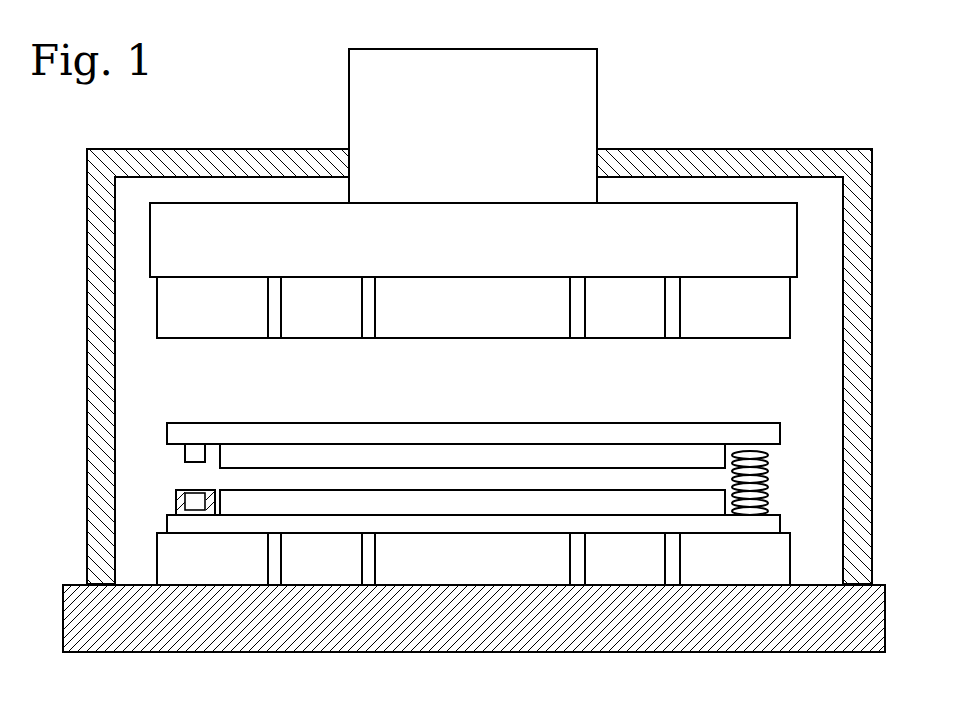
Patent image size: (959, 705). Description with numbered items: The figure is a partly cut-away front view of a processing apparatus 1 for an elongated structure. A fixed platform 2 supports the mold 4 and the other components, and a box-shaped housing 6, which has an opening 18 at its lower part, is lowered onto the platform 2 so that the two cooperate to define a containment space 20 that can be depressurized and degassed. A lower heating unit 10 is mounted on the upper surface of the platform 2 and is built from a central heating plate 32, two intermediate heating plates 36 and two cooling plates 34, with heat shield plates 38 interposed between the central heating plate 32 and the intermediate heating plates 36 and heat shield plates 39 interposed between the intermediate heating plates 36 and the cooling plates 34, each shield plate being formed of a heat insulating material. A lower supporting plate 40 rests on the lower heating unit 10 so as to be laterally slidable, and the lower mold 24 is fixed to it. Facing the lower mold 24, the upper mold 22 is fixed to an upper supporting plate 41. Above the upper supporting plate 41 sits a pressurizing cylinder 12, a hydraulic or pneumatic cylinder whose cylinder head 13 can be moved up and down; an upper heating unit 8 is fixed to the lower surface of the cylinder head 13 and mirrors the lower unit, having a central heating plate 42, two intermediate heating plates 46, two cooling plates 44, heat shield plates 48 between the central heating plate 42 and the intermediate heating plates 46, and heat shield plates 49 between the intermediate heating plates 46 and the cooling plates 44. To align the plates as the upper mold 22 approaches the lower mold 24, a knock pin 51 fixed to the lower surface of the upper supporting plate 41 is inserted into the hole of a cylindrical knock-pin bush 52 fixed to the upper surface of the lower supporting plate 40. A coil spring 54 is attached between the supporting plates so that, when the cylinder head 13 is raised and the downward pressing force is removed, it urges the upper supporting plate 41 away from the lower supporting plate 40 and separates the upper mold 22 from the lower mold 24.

The processing apparatus 1 is at (790, 84).
The platform 2 is at (124, 652).
The mold 4 is at (443, 388).
The housing 6 is at (229, 148).
The upper heating unit 8 is at (812, 294).
The lower heating unit 10 is at (812, 553).
The pressurizing cylinder 12 is at (598, 82).
The cylinder head 13 is at (163, 235).
The opening 18 is at (820, 565).
The containment space 20 is at (162, 379).
The upper mold 22 is at (440, 452).
The lower mold 24 is at (563, 500).
The central heating plate 32 is at (440, 575).
The cooling plate 34 is at (222, 575).
The intermediate heating plate 36 is at (333, 578).
The heat shield plate 38 is at (368, 578).
The heat shield plate 39 is at (277, 578).
The lower supporting plate 40 is at (610, 520).
The upper supporting plate 41 is at (366, 428).
The central heating plate 42 is at (447, 327).
The cooling plate 44 is at (158, 302).
The intermediate heating plate 46 is at (322, 327).
The heat shield plate 48 is at (370, 327).
The heat shield plate 49 is at (273, 327).
The knock pin 51 is at (208, 448).
The knock-pin bush 52 is at (176, 498).
The coil spring 54 is at (771, 468).